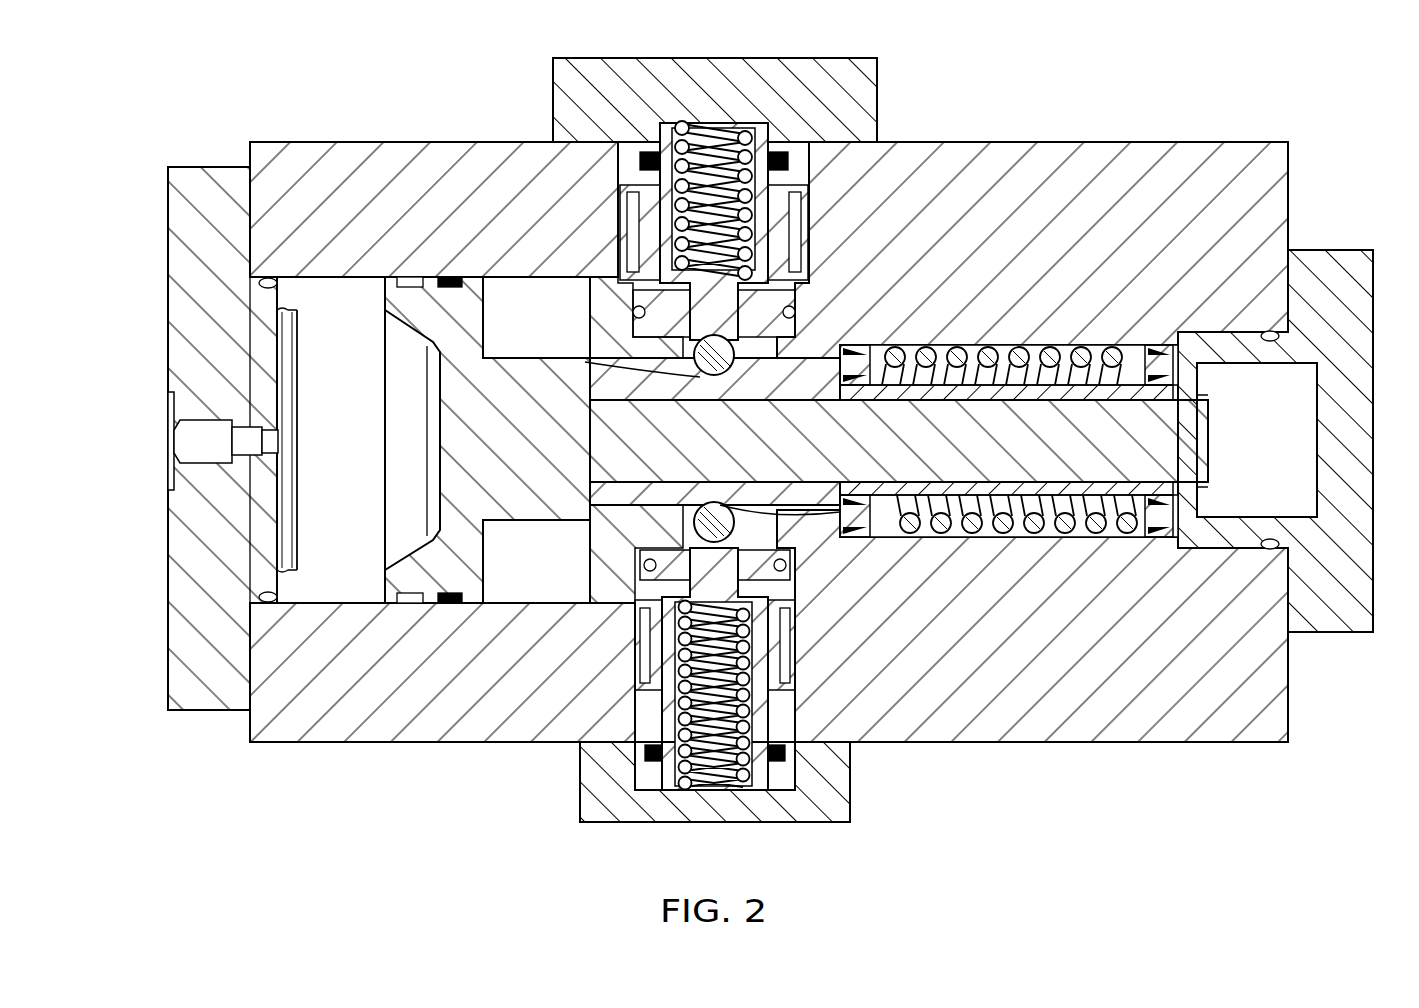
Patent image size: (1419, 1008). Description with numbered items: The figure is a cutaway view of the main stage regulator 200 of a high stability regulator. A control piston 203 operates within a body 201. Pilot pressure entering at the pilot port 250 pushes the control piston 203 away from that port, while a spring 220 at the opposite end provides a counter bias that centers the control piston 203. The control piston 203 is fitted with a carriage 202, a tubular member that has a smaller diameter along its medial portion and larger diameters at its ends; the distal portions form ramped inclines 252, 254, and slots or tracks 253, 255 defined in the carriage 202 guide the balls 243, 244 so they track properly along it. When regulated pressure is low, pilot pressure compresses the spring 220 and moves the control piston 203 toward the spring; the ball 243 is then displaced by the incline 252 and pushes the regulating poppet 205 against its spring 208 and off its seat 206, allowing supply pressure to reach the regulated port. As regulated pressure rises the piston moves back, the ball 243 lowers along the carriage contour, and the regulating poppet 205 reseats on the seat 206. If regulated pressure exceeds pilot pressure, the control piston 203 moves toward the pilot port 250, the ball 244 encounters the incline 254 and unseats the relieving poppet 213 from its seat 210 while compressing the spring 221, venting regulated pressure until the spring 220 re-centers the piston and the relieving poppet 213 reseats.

The main stage regulator 200 is at (226, 94).
The body 201 is at (312, 148).
The carriage 202 is at (622, 490).
The control piston 203 is at (418, 585).
The regulating poppet 205 is at (790, 262).
The seat 206 is at (637, 308).
The spring 208 is at (740, 130).
The seat 210 is at (640, 562).
The relieving poppet 213 is at (670, 665).
The spring 220 is at (992, 532).
The spring 221 is at (720, 772).
The ball 243 is at (745, 316).
The ball 244 is at (714, 508).
The pilot port 250 is at (180, 440).
The ramped incline 252 is at (600, 372).
The slot or track 253 is at (823, 373).
The ramped incline 254 is at (805, 512).
The slot or track 255 is at (752, 515).